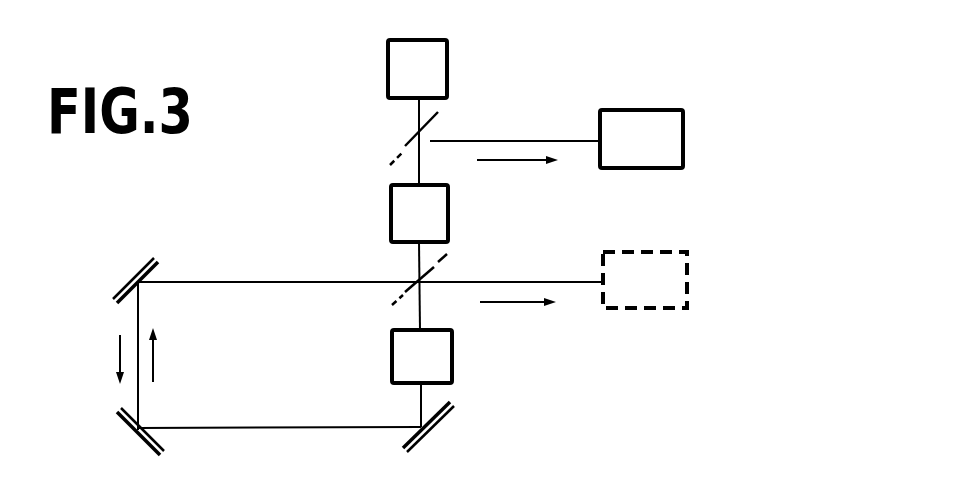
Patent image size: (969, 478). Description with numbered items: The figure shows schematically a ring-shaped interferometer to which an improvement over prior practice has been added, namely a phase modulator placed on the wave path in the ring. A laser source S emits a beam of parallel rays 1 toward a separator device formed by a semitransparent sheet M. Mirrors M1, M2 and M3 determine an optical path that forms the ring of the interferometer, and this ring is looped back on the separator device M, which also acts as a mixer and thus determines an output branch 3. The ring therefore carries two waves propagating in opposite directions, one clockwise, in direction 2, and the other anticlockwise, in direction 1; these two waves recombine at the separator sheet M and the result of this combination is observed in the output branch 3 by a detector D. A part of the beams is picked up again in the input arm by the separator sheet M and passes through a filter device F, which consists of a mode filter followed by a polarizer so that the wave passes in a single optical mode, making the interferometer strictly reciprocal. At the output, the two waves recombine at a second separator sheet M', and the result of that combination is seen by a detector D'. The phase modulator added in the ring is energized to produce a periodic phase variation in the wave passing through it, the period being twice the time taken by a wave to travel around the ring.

The laser source S is at (462, 42).
The separator sheet M' is at (444, 131).
The beam of parallel rays 1 is at (432, 170).
The detector D' is at (714, 116).
The filter device F is at (448, 207).
The semitransparent sheet M is at (441, 274).
The output branch 3 is at (530, 278).
The detector D is at (710, 258).
The mirror M3 is at (140, 263).
The clockwise direction 2 is at (138, 398).
The mirror M2 is at (132, 433).
The mirror M1 is at (447, 413).